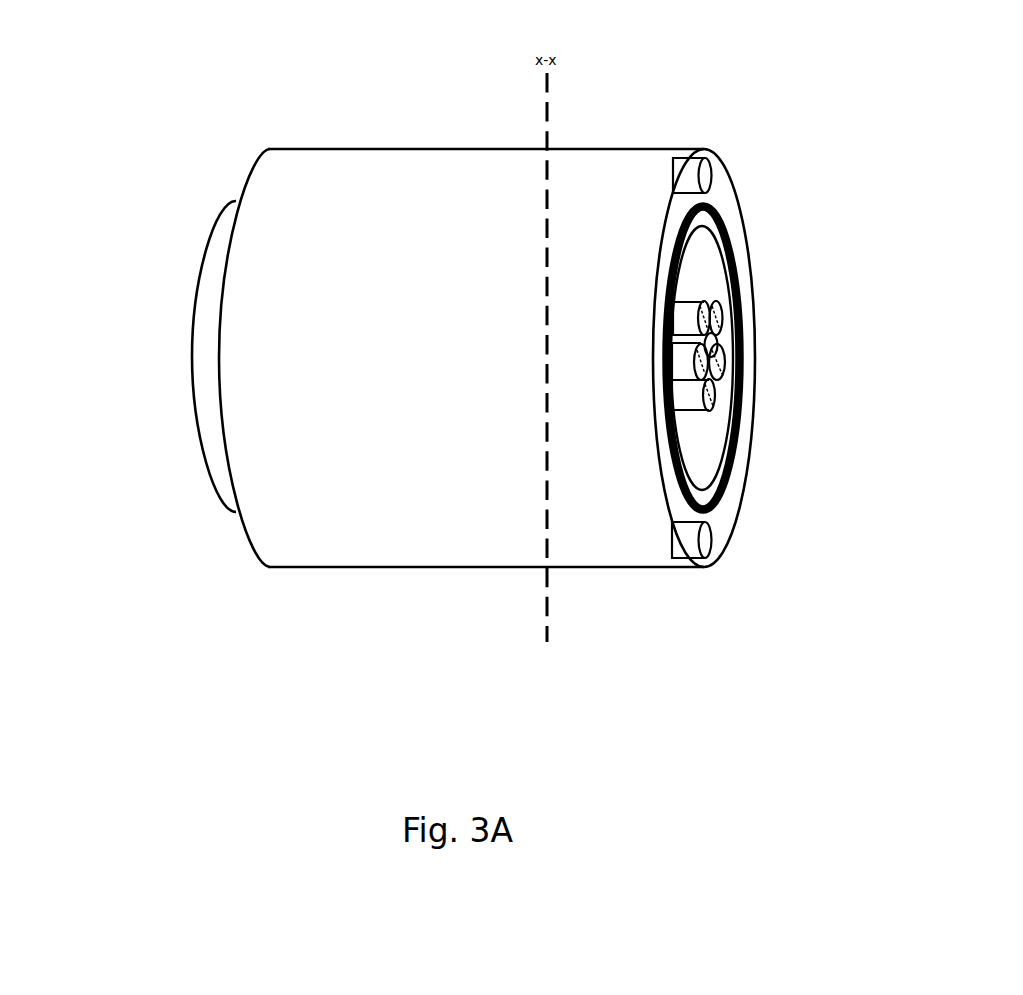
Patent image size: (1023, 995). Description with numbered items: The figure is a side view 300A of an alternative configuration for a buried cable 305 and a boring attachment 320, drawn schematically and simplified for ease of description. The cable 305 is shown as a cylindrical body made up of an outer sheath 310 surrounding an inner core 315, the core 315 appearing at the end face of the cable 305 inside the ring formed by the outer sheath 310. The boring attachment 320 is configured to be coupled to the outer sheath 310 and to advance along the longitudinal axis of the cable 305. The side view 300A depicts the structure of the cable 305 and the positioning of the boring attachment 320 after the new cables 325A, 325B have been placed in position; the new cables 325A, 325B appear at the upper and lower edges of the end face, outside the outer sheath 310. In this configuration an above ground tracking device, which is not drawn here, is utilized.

The side view 300A is at (599, 464).
The cable 305 is at (599, 358).
The outer sheath 310 is at (717, 210).
The core 315 is at (793, 357).
The boring attachment 320 is at (750, 265).
The new cable 325A is at (712, 175).
The new cable 325B is at (712, 538).